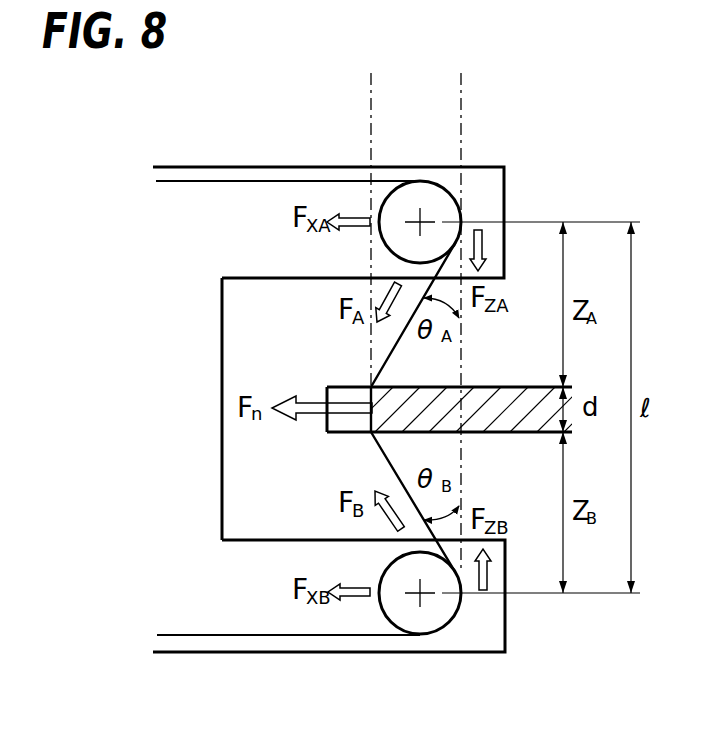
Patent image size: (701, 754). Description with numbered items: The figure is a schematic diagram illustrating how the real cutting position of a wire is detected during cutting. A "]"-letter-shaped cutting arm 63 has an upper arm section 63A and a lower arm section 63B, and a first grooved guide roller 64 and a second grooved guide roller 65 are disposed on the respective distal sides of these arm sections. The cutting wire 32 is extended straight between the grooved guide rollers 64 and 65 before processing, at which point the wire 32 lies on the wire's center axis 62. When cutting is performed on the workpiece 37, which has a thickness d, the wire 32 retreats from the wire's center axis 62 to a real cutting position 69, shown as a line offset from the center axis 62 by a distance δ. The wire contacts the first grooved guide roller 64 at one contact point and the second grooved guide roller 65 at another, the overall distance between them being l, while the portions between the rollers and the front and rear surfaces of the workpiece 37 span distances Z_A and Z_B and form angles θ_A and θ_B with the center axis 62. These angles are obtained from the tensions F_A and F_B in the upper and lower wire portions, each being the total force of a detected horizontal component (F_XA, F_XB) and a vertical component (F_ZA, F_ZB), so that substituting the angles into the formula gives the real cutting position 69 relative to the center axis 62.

The cutting wire 32 is at (187, 183).
The workpiece 37 is at (522, 425).
The wire's center axis 62 is at (461, 81).
The cutting arm 63 is at (326, 397).
The upper arm section 63A is at (483, 188).
The lower arm section 63B is at (483, 640).
The first grooved guide roller 64 is at (443, 204).
The second grooved guide roller 65 is at (432, 616).
The real cutting position 69 is at (370, 86).